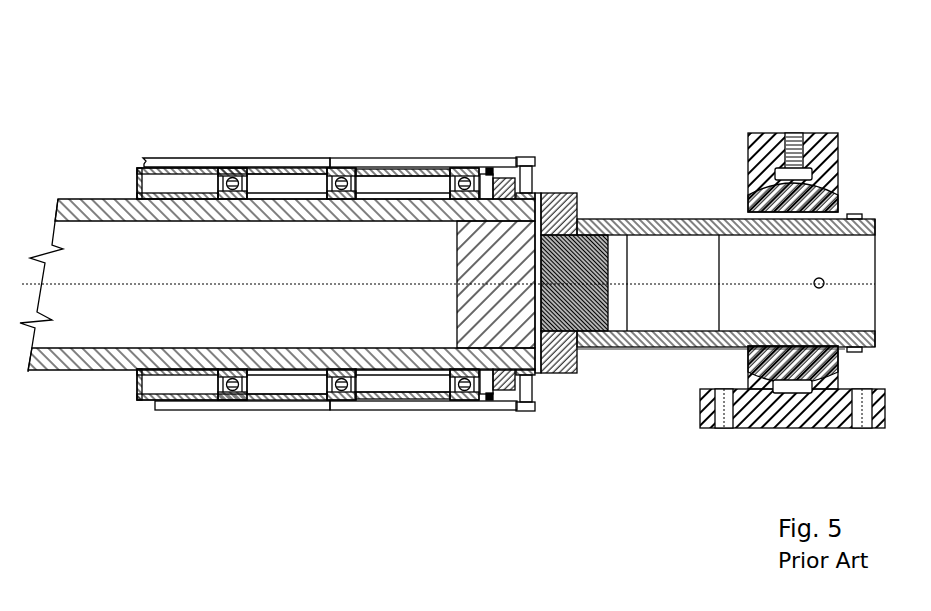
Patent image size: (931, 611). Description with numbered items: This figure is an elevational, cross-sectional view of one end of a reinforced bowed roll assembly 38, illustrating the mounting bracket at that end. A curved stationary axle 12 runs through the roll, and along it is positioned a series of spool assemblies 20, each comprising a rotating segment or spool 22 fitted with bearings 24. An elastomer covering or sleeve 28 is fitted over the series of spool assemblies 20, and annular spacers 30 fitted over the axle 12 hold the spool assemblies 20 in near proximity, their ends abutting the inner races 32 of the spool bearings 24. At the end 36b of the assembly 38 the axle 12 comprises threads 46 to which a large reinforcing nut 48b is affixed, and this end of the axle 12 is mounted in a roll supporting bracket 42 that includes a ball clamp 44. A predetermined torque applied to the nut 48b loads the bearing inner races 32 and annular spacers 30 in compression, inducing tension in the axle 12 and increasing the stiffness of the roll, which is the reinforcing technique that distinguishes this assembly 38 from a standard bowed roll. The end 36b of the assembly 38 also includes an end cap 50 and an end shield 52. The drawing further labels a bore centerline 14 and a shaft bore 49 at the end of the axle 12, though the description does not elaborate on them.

The curved stationary axle 12 is at (277, 215).
The bore centerline 14 is at (448, 308).
The spool assembly 20 is at (236, 247).
The rotating segment (spool) 22 is at (349, 135).
The bearings 24 is at (348, 250).
The elastomer covering or sleeve 28 is at (443, 283).
The annular spacers 30 is at (232, 284).
The inner races 32 is at (359, 416).
The end of the assembly 36b is at (615, 259).
The reinforced bowed roll assembly 38 is at (691, 68).
The roll supporting bracket 42 is at (792, 225).
The ball clamp 44 is at (786, 229).
The threads 46 is at (606, 253).
The reinforcing nut 48b is at (726, 366).
The shaft bore 49 is at (706, 401).
The end cap 50 is at (574, 240).
The end shield 52 is at (571, 257).